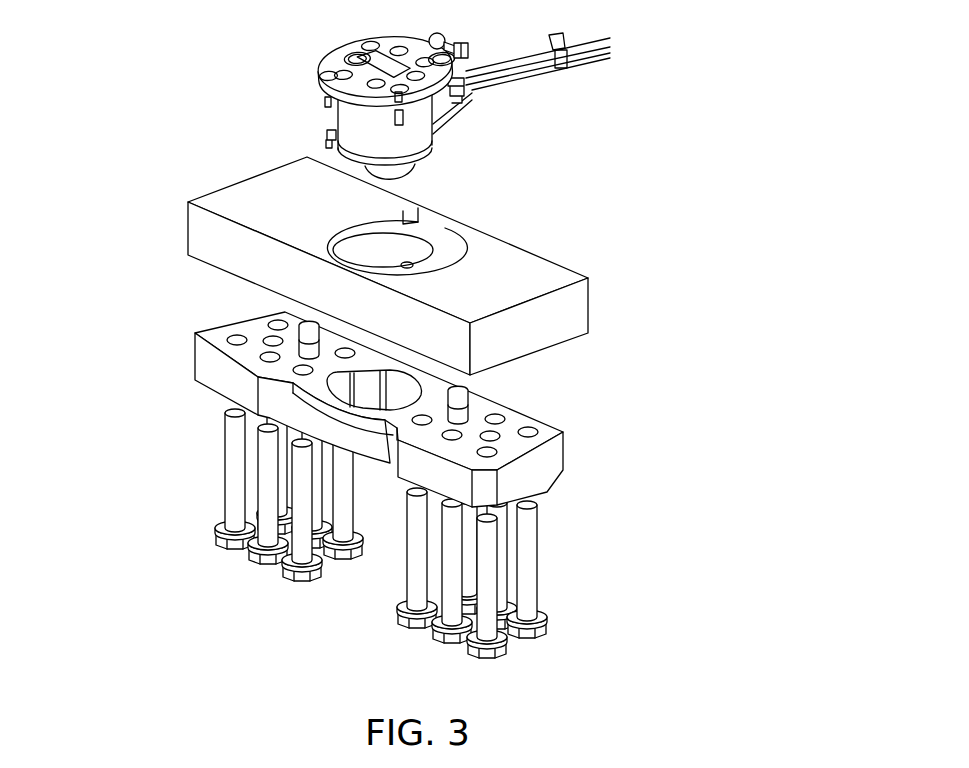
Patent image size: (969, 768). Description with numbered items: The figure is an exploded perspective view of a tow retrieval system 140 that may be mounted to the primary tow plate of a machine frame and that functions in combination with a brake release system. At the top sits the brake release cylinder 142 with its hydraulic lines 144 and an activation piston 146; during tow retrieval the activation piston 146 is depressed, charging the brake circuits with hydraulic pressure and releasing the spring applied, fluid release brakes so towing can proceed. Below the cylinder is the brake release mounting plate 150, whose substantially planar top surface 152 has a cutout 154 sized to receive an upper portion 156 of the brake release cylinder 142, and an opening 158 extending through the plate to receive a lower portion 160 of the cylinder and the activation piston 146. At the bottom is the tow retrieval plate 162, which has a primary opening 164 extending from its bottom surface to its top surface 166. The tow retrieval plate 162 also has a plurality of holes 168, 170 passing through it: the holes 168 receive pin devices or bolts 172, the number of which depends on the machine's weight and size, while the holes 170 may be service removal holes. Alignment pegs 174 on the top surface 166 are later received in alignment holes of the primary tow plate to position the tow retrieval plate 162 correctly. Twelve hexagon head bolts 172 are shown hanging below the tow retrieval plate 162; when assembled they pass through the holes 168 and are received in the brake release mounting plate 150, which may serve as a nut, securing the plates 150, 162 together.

The tow retrieval system 140 is at (163, 56).
The brake release cylinder 142 is at (338, 62).
The hydraulic lines 144 is at (525, 70).
The activation piston 146 is at (405, 185).
The brake release mounting plate 150 is at (185, 232).
The top surface 152 is at (228, 207).
The cutout 154 is at (350, 212).
The upper portion 156 is at (350, 100).
The opening 158 is at (452, 238).
The lower portion 160 is at (410, 136).
The tow retrieval plate 162 is at (195, 378).
The primary opening 164 is at (367, 403).
The top surface 166 is at (245, 362).
The holes 168 is at (237, 340).
The holes 170 is at (273, 340).
The bolts 172 is at (233, 497).
The alignment pegs 174 is at (313, 333).